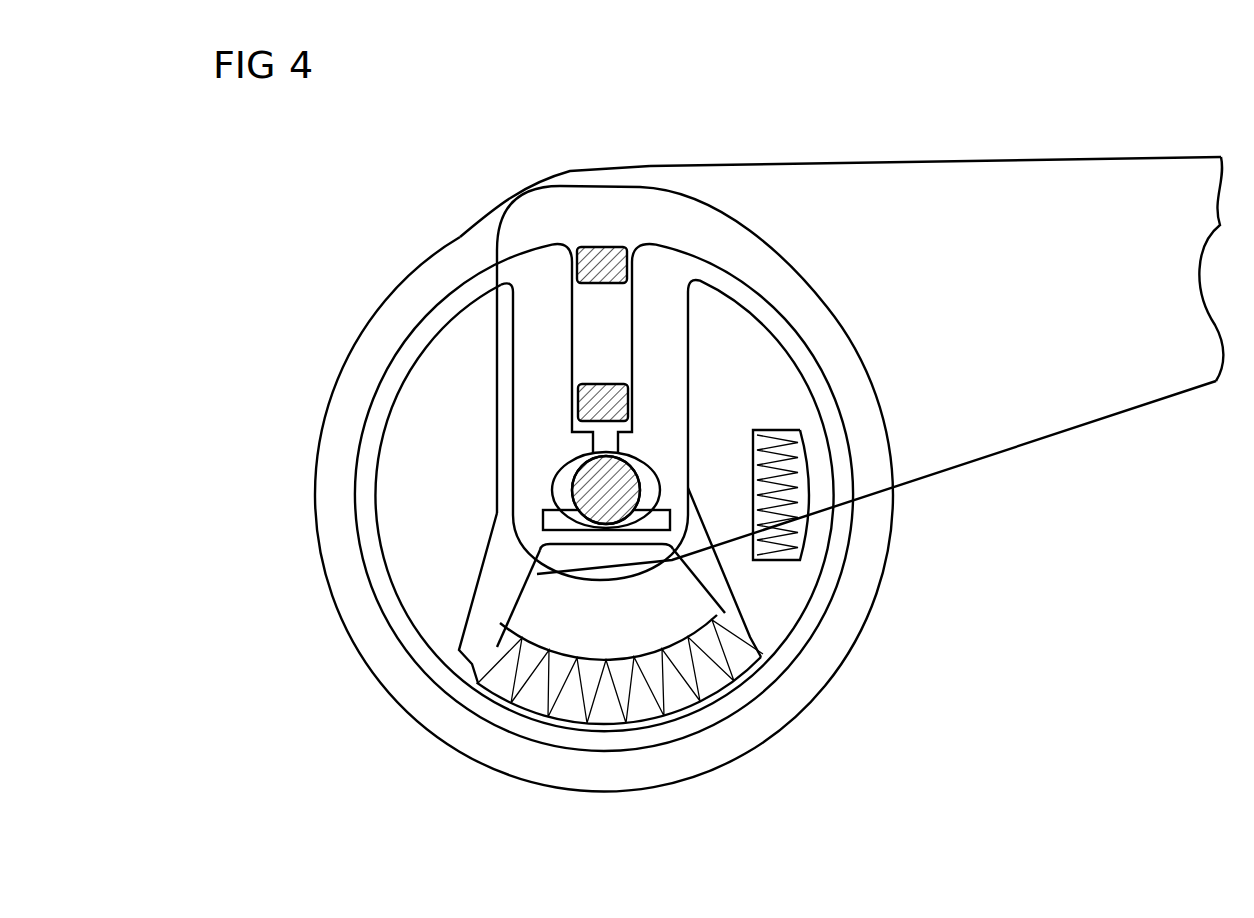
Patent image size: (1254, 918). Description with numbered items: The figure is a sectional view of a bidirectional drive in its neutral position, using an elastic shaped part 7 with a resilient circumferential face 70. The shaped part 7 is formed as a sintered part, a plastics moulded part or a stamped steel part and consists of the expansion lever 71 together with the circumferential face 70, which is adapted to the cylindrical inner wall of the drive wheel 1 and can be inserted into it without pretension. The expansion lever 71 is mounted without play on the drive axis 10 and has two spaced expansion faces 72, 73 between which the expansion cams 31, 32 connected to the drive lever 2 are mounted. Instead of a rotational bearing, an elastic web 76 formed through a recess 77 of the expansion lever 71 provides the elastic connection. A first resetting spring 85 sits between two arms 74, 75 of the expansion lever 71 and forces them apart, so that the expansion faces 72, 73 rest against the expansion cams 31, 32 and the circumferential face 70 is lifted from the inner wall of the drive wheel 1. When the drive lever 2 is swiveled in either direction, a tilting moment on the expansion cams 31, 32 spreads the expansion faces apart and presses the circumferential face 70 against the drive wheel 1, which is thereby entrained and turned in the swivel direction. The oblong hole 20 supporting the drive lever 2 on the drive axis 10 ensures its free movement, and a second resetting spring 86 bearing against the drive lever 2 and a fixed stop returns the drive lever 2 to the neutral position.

The drive wheel 1 is at (858, 594).
The drive lever 2 is at (967, 213).
The shaped part 7 is at (415, 335).
The circumferential face 70 is at (385, 354).
The expansion lever 71 is at (511, 440).
The expansion face 72 is at (572, 304).
The expansion face 73 is at (632, 313).
The arm 74 is at (487, 620).
The arm 75 is at (742, 631).
The elastic web 76 is at (630, 537).
The recess 77 is at (553, 522).
The drive axis 10 is at (621, 484).
The oblong hole 20 is at (553, 484).
The expansion cam 31 is at (603, 248).
The expansion cam 32 is at (632, 395).
The first resetting spring 85 is at (580, 712).
The second resetting spring 86 is at (788, 490).